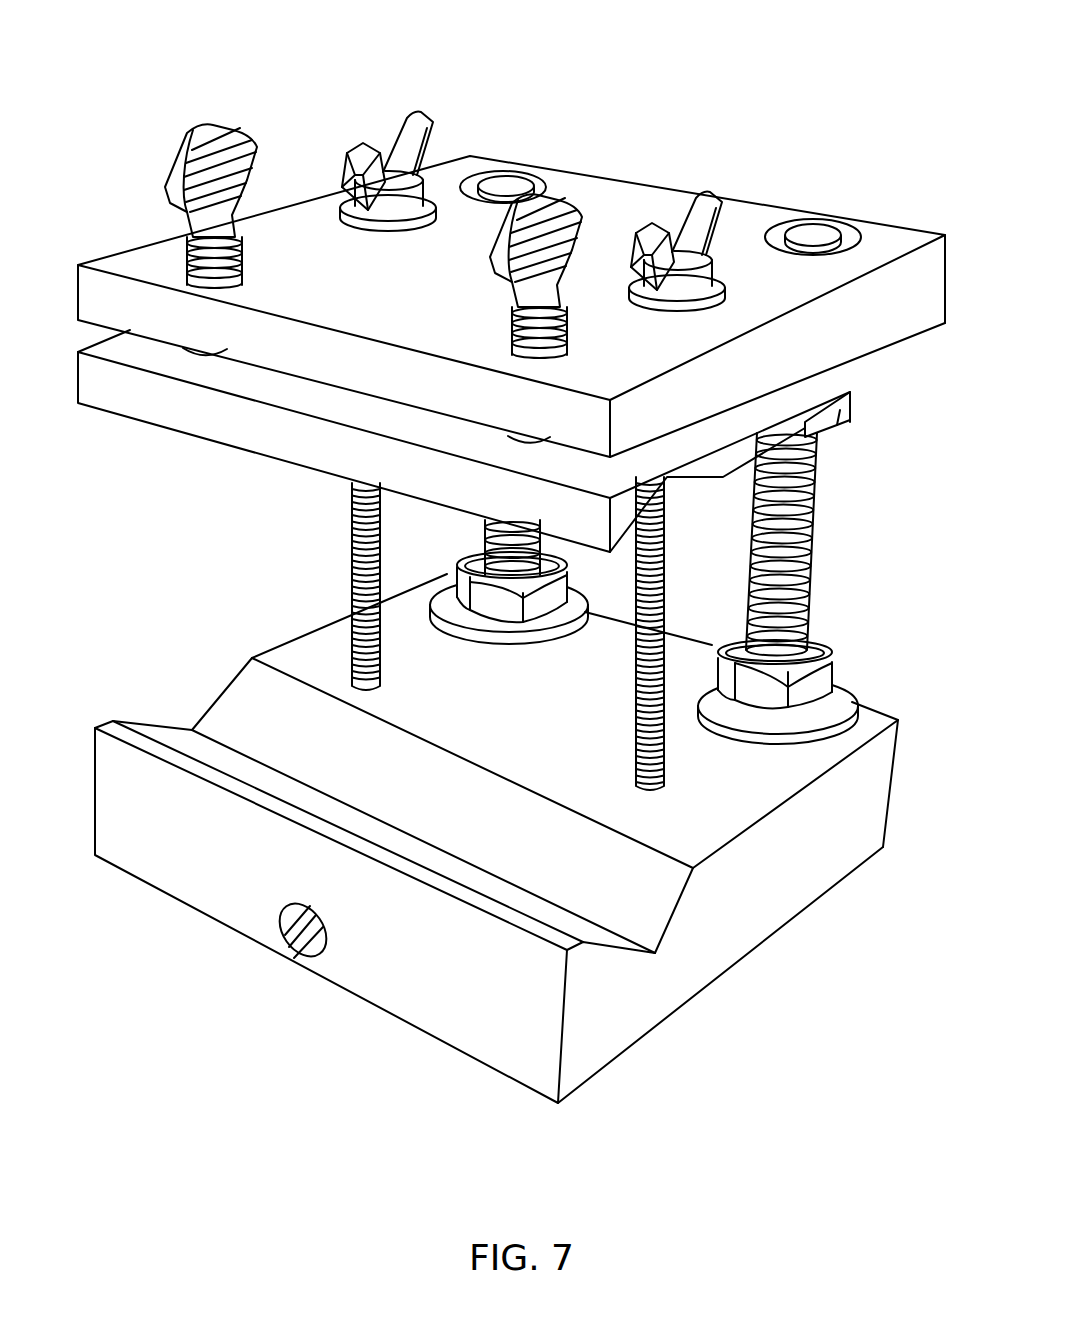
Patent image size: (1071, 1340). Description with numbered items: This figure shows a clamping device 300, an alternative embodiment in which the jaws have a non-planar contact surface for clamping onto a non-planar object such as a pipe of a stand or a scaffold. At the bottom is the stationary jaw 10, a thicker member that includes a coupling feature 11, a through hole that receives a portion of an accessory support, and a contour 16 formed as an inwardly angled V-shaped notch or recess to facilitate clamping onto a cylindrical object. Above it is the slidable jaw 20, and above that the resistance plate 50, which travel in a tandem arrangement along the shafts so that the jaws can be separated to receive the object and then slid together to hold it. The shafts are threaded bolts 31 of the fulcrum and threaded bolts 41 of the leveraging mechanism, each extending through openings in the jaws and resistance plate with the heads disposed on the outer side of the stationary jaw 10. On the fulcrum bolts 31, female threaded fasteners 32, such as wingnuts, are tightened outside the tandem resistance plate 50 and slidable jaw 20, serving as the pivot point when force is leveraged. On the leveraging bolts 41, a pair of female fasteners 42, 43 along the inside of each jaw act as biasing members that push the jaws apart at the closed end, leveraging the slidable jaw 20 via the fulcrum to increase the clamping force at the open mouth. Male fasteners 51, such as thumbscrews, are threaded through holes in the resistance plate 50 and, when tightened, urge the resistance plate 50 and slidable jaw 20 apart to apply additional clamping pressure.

The clamping device 300 is at (300, 90).
The stationary jaw 10 is at (163, 880).
The coupling feature 11 is at (281, 927).
The contour 16 is at (257, 678).
The slidable jaw 20 is at (140, 419).
The threaded bolt 31 is at (352, 590).
The female threaded fastener 32 is at (425, 152).
The threaded bolt 41 is at (813, 567).
The female fastener 42 is at (458, 574).
The female fastener 43 is at (853, 403).
The resistance plate 50 is at (150, 268).
The male fastener 51 is at (183, 181).